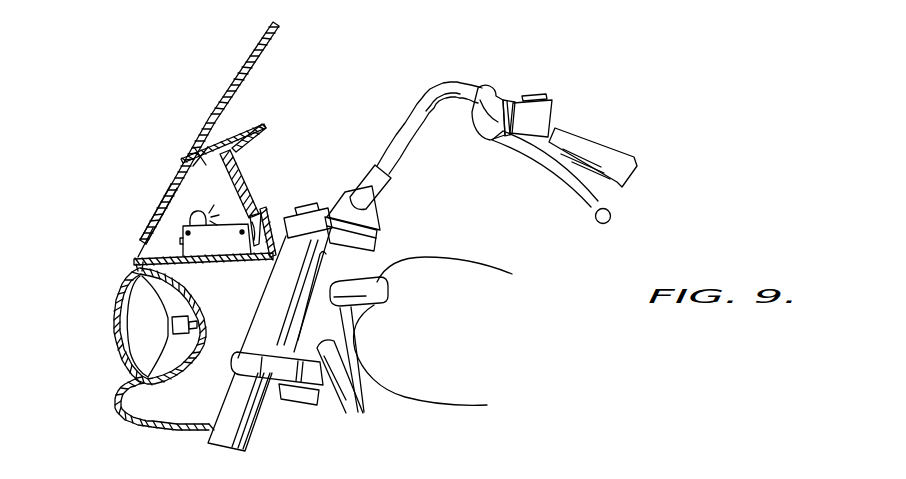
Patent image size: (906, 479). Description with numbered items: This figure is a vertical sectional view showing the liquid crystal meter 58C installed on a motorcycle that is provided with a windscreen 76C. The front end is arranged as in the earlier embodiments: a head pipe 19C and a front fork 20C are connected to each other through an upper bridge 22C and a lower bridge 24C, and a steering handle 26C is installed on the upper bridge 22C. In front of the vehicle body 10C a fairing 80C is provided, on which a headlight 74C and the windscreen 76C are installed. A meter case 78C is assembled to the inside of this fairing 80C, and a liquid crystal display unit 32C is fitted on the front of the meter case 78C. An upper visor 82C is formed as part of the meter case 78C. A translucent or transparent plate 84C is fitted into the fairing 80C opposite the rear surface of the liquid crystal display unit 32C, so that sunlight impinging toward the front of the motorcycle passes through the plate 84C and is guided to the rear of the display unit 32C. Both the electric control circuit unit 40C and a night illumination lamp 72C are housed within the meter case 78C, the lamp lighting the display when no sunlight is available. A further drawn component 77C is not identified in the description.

The vehicle body 10C is at (406, 244).
The head pipe 19C is at (333, 325).
The front fork 20C is at (243, 441).
The upper bridge 22C is at (383, 235).
The lower bridge 24C is at (232, 360).
The steering handle 26C is at (446, 87).
The liquid crystal display unit 32C is at (256, 191).
The electric control circuit unit 40C is at (185, 249).
The liquid crystal meter 58C is at (262, 164).
The night illumination lamp 72C is at (190, 216).
The headlight 74C is at (123, 327).
The windscreen 76C is at (244, 72).
The fuel tank 77C is at (445, 402).
The meter case 78C is at (210, 265).
The fairing 80C is at (138, 227).
The upper visor 82C is at (240, 129).
The translucent or transparent plate 84C is at (165, 207).